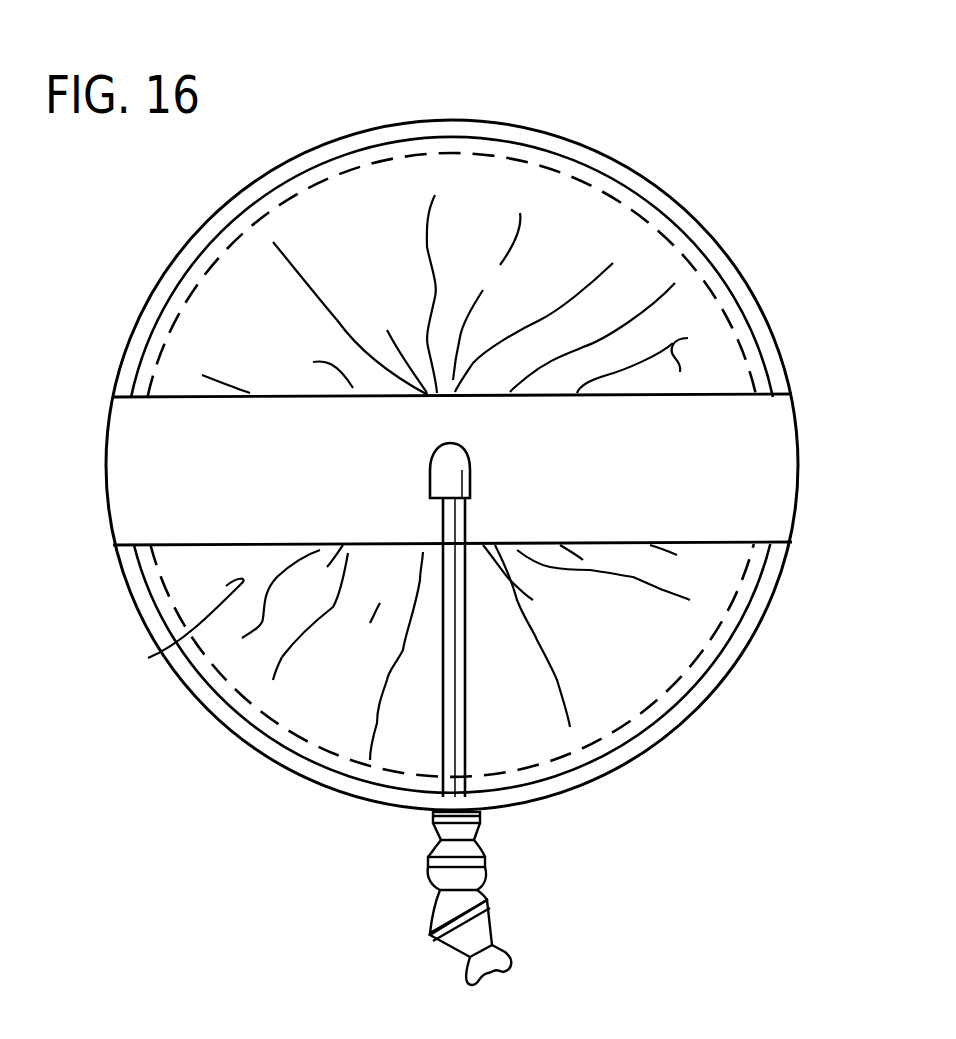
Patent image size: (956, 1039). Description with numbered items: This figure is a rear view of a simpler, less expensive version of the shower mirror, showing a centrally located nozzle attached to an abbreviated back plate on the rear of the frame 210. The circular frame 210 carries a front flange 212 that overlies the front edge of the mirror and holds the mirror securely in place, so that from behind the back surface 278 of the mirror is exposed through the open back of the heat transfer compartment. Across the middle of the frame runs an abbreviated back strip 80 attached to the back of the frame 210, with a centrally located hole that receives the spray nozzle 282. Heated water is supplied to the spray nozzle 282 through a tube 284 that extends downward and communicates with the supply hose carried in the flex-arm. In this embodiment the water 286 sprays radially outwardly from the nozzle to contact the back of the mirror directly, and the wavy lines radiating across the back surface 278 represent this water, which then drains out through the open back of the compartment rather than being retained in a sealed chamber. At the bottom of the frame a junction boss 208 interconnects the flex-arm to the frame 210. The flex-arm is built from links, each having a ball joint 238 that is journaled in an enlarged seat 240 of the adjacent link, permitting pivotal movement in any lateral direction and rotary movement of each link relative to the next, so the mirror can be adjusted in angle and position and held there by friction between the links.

The frame 210 is at (655, 198).
The front flange 212 is at (612, 736).
The strap 80 is at (641, 481).
The back surface of the mirror 278 is at (673, 343).
The water 286 is at (282, 657).
The spray nozzle 282 is at (450, 455).
The tube 284 is at (447, 748).
The junction boss 208 is at (482, 852).
The ball joint 238 is at (437, 905).
The enlarged seat 240 is at (528, 937).